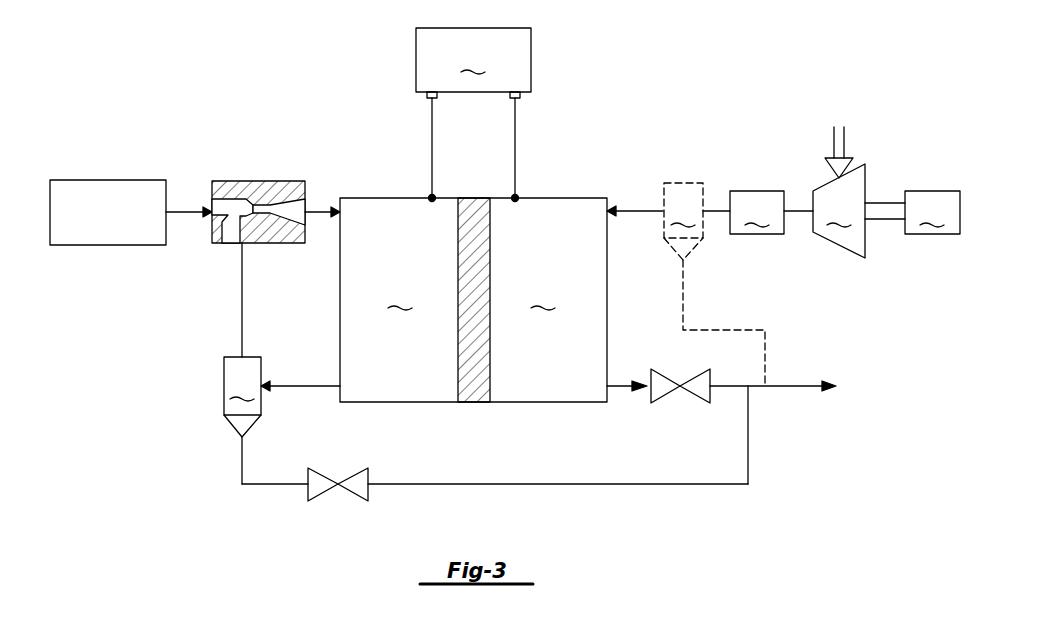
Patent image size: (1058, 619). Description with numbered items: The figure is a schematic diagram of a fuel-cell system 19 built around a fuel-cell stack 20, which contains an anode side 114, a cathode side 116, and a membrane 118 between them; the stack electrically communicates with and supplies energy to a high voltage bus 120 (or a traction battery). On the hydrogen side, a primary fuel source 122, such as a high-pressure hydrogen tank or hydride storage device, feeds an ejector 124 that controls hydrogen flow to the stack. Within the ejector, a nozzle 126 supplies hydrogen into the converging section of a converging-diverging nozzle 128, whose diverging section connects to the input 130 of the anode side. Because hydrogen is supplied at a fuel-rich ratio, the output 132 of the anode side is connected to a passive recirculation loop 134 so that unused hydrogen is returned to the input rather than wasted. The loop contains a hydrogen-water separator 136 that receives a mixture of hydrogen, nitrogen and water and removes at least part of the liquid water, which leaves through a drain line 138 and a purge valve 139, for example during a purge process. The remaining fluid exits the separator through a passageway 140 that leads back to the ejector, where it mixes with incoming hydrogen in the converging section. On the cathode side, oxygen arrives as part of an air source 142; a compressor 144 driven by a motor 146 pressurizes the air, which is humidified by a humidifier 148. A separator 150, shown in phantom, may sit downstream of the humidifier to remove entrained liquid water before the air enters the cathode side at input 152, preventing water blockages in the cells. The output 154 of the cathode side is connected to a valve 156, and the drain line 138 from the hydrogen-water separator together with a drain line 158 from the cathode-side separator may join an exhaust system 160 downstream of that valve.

The fuel-cell system 19 is at (152, 43).
The fuel-cell stack 20 is at (473, 281).
The anode side 114 is at (399, 300).
The cathode side 116 is at (548, 300).
The membrane 118 is at (472, 402).
The high voltage bus 120 is at (473, 115).
The primary fuel source 122 is at (108, 180).
The ejector 124 is at (270, 163).
The nozzle 126 is at (233, 195).
The converging-diverging nozzle 128 is at (251, 203).
The input 130 is at (338, 216).
The output 132 is at (338, 387).
The passive recirculation loop 134 is at (150, 372).
The hydrogen-water separator 136 is at (242, 397).
The drain line 138 is at (242, 460).
The purge valve 139 is at (340, 489).
The passageway 140 is at (242, 300).
The air source 142 is at (845, 140).
The compressor 144 is at (839, 211).
The motor 146 is at (932, 212).
The humidifier 148 is at (757, 212).
The separator 150 is at (683, 221).
The input 152 is at (643, 210).
The output 154 is at (622, 388).
The valve 156 is at (680, 390).
The drain line 158 is at (722, 330).
The exhaust system 160 is at (797, 389).